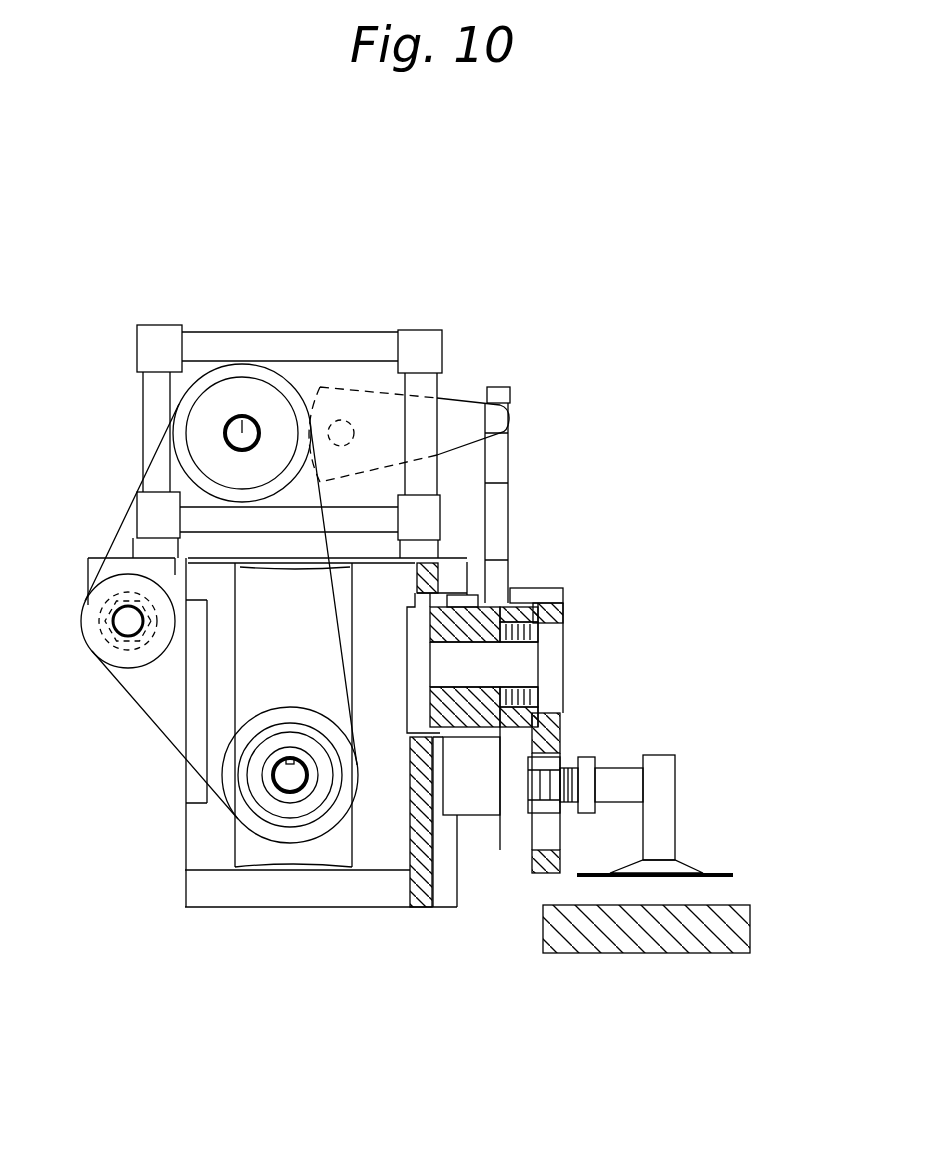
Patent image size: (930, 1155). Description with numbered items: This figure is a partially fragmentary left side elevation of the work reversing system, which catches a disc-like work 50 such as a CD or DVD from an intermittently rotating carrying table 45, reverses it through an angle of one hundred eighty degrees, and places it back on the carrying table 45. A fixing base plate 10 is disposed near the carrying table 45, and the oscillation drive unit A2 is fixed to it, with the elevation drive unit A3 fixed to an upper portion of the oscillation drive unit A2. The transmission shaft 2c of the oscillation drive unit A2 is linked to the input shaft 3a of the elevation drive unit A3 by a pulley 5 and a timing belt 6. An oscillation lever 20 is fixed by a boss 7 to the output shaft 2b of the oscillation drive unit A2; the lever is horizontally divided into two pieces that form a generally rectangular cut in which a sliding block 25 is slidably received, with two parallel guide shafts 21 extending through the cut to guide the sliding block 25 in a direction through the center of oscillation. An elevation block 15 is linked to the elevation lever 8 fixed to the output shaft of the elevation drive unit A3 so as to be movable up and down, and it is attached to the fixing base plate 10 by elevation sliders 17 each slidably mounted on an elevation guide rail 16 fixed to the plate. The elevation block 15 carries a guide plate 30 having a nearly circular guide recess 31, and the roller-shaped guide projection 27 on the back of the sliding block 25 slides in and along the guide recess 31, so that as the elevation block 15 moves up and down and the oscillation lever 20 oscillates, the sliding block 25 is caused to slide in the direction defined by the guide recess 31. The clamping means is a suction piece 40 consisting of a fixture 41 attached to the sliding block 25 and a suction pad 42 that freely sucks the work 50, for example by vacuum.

The input shaft 3a is at (239, 430).
The elevation drive unit A3 is at (323, 392).
The elevation lever 8 is at (463, 404).
The pulley 5 is at (207, 418).
The timing belt 6 is at (145, 450).
The elevation block 15 is at (508, 493).
The boss 7 is at (468, 595).
The guide projection 27 is at (560, 690).
The oscillation lever 20 is at (572, 730).
The sliding block 25 is at (585, 760).
The fixture 41 is at (625, 765).
The suction piece 40 is at (675, 790).
The suction pad 42 is at (680, 850).
The work 50 is at (723, 873).
The carrying table 45 is at (690, 945).
The oscillation drive unit A2 is at (222, 712).
The transmission shaft 2c is at (287, 782).
The output shaft 2b is at (457, 658).
The elevation slider 17 is at (408, 790).
The fixing base plate 10 is at (413, 897).
The elevation guide rail 16 is at (441, 893).
The guide recess 31 is at (480, 830).
The guide plate 30 is at (500, 822).
The guide shaft 21 is at (541, 875).